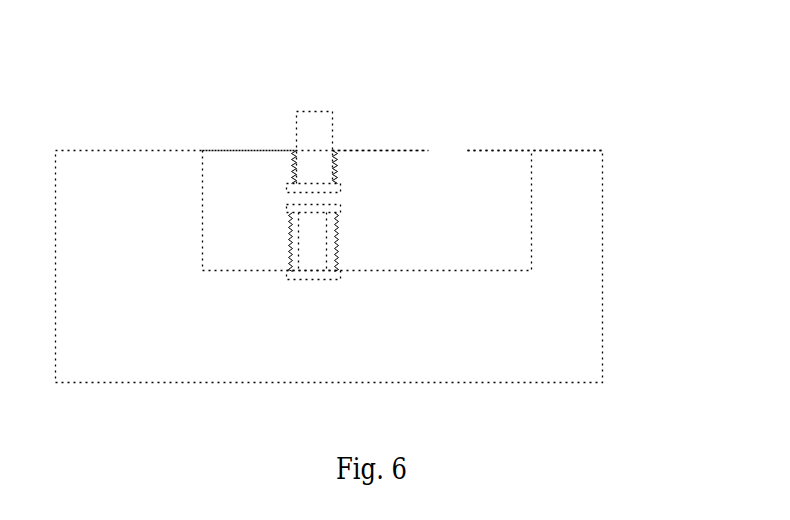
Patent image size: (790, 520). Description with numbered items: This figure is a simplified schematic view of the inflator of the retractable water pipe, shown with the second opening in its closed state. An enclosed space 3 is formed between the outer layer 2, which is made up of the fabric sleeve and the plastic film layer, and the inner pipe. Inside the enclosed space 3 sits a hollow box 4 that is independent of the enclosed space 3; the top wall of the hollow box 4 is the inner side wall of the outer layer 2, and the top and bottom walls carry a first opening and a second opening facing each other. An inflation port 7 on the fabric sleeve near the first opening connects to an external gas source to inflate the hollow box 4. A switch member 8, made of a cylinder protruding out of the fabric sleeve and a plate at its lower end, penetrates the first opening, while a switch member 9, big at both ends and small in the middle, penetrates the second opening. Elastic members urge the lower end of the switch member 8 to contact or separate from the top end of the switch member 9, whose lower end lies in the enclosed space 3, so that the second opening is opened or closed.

The outer layer 2 is at (232, 150).
The enclosed space 3 is at (574, 326).
The hollow box 4 is at (482, 240).
The inflation port 7 is at (448, 148).
The switch member 8 is at (316, 118).
The switch member 9 is at (320, 262).